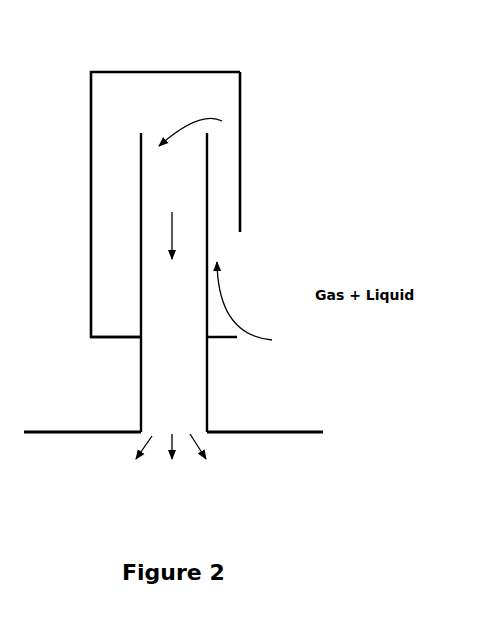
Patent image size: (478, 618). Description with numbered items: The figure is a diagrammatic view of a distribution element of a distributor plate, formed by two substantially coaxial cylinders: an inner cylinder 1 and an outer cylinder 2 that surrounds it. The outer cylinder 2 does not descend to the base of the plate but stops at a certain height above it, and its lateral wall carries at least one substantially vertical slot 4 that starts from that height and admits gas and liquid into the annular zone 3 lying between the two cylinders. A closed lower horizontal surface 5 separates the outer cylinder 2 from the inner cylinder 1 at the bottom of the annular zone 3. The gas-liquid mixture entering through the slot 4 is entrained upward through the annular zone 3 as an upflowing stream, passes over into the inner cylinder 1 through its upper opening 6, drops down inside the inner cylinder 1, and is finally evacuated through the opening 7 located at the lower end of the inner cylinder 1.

The inner cylinder 1 is at (211, 159).
The outer cylinder 2 is at (244, 80).
The annular zone 3 is at (297, 181).
The vertical slot 4 is at (244, 300).
The lower horizontal surface 5 is at (117, 344).
The upper opening 6 is at (163, 129).
The opening 7 is at (201, 434).